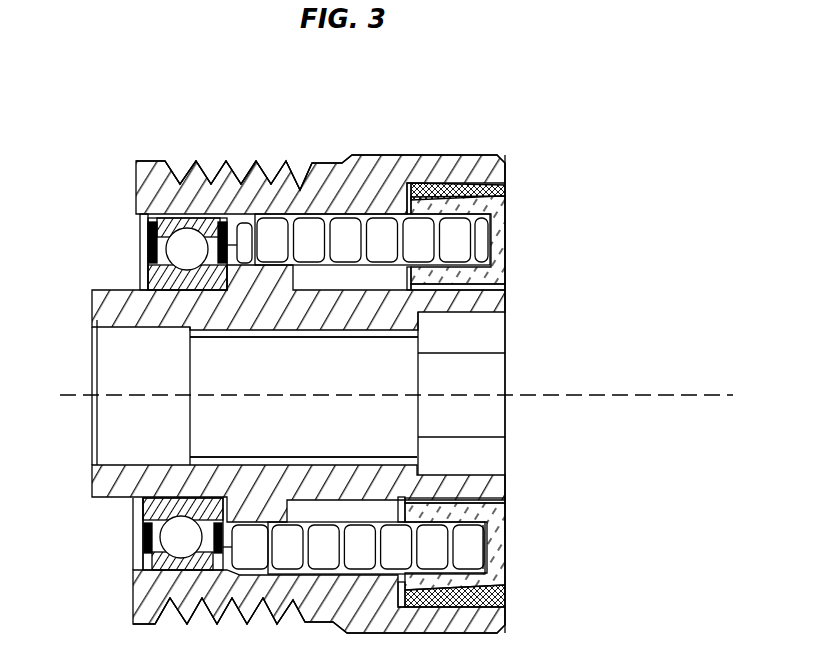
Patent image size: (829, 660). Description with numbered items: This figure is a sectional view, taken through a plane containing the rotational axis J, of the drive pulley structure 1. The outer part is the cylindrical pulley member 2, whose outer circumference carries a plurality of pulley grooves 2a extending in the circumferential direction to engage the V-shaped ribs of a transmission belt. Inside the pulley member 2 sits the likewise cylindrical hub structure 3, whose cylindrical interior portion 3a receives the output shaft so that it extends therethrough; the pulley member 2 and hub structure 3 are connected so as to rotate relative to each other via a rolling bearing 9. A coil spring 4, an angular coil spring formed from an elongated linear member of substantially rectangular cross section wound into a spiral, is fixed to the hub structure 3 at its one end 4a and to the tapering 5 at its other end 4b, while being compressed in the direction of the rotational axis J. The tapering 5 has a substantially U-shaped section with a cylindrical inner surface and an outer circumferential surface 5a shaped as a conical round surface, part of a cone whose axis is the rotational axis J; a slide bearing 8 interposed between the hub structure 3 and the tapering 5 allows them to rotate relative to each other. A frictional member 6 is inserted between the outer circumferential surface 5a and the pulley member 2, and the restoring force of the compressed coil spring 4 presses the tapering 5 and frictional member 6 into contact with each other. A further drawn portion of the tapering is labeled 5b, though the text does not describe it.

The drive pulley structure 1 is at (520, 135).
The pulley member 2 is at (498, 171).
The pulley grooves 2a is at (212, 178).
The hub structure 3 is at (497, 302).
The cylindrical interior portion 3a is at (372, 333).
The coil spring 4 is at (347, 243).
The one end of the coil spring 4a is at (243, 222).
The other end of the coil spring 4b is at (489, 250).
The tapering 5 is at (490, 228).
The outer circumferential surface 5a is at (424, 193).
The inner core plate of seal 5b is at (482, 292).
The frictional member 6 is at (500, 197).
The slide bearing 8 is at (463, 288).
The rolling bearing 9 is at (142, 218).
The rotational axis J is at (697, 394).